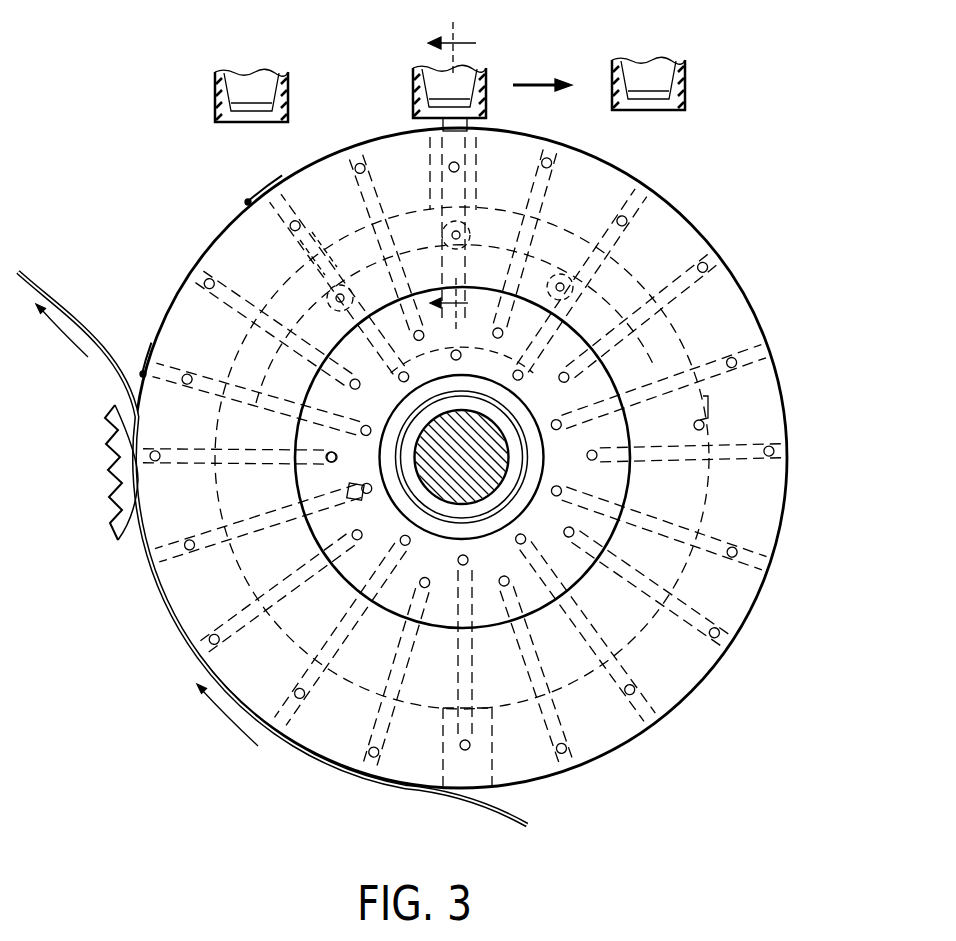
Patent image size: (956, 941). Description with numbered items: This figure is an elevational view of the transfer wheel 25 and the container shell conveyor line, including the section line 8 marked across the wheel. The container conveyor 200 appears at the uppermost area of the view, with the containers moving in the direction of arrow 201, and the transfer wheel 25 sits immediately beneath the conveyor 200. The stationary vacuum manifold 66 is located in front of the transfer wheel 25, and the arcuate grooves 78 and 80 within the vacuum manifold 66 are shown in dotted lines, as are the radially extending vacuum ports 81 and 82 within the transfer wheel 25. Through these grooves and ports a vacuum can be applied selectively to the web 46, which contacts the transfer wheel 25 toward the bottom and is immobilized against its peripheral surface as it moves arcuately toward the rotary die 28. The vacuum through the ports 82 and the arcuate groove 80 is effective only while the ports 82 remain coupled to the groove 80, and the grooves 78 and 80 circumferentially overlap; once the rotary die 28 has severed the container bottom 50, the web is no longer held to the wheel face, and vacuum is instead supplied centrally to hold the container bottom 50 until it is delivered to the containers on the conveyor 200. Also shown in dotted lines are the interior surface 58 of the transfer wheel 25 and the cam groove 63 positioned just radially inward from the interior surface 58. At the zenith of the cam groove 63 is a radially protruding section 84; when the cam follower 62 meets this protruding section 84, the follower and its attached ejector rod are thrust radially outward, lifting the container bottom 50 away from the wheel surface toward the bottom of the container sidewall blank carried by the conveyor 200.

The section line 8- 8 is at (465, 177).
The transfer wheel 25 is at (706, 238).
The rotary die 28 is at (110, 490).
The web 46 is at (485, 807).
The container bottom 50 is at (266, 197).
The interior surface 58 is at (712, 425).
The cam follower 62 is at (522, 141).
The cam groove 63 is at (606, 164).
The stationary vacuum manifold 66 is at (615, 378).
The arcuate groove 78 is at (346, 490).
The arcuate groove 80 is at (326, 452).
The vacuum port 81 is at (290, 223).
The vacuum port 82 is at (232, 297).
The radially protruding section 84 is at (387, 140).
The container conveyor 200 is at (633, 57).
The arrow 201 is at (533, 82).